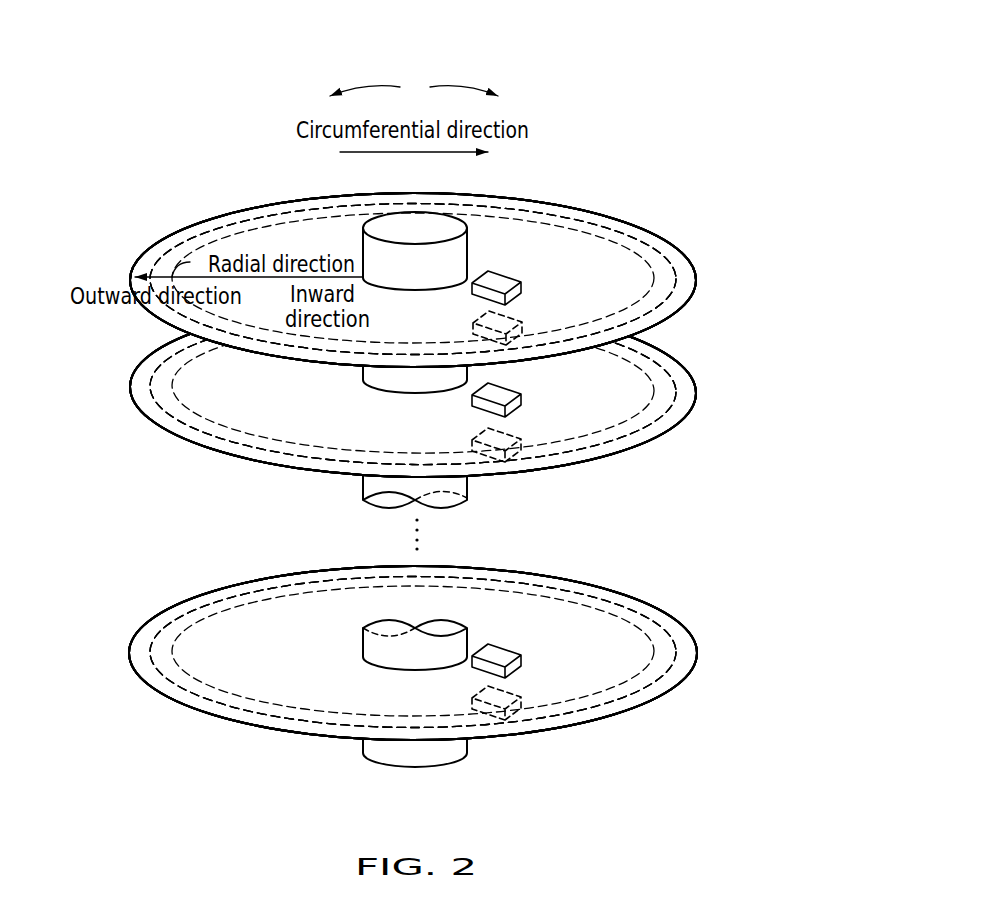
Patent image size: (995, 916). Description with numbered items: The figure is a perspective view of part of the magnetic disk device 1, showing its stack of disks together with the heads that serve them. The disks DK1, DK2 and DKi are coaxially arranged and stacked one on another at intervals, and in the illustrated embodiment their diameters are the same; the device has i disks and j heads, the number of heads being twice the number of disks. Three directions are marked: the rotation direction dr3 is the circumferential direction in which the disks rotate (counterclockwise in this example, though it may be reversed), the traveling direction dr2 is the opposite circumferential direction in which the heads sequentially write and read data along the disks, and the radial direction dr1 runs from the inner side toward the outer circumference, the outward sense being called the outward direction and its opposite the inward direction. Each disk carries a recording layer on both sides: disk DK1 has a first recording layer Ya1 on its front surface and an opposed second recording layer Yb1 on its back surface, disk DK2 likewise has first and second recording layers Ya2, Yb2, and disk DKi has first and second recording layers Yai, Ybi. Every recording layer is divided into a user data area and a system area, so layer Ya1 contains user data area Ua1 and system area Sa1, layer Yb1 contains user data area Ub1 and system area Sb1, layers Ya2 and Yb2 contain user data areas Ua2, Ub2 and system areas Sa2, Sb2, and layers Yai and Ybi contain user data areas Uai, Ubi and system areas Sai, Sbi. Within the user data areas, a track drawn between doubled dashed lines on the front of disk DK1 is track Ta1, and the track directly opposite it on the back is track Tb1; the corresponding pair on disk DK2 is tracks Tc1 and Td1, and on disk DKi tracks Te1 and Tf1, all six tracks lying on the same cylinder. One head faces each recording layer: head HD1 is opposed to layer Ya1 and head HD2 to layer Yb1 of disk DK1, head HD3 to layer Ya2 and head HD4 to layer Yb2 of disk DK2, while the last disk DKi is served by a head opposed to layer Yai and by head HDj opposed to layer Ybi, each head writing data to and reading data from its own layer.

The magnetic disk device 1 is at (735, 61).
The disk DK1 is at (268, 205).
The disk DK2 is at (256, 464).
The disk DKi is at (263, 727).
The track Ta1 is at (222, 219).
The track Tb1 is at (243, 346).
The track Tc1 is at (168, 359).
The track Td1 is at (217, 445).
The track Te1 is at (230, 596).
The track Tf1 is at (218, 706).
The system area Sa1 is at (678, 250).
The system area Sb1 is at (693, 302).
The system area Sa2 is at (688, 387).
The system area Sb2 is at (689, 423).
The system area Sai is at (685, 636).
The system area Sbi is at (686, 688).
The user data area Ua1 is at (613, 256).
The user data area Ub1 is at (305, 364).
The user data area Ua2 is at (560, 412).
The user data area Ub2 is at (626, 461).
The user data area Uai is at (614, 660).
The user data area Ubi is at (629, 720).
The first recording layer Ya1 is at (164, 240).
The second recording layer Yb1 is at (155, 324).
The first recording layer Ya2 is at (135, 376).
The second recording layer Yb2 is at (137, 421).
The first recording layer Yai is at (133, 637).
The second recording layer Ybi is at (136, 676).
The head HD1 is at (508, 278).
The head HD2 is at (508, 321).
The head HD3 is at (480, 397).
The head HD4 is at (480, 429).
The head HDj is at (482, 688).
The radial direction dr1 is at (160, 276).
The traveling direction dr2 is at (463, 88).
The rotation direction dr3 is at (363, 88).